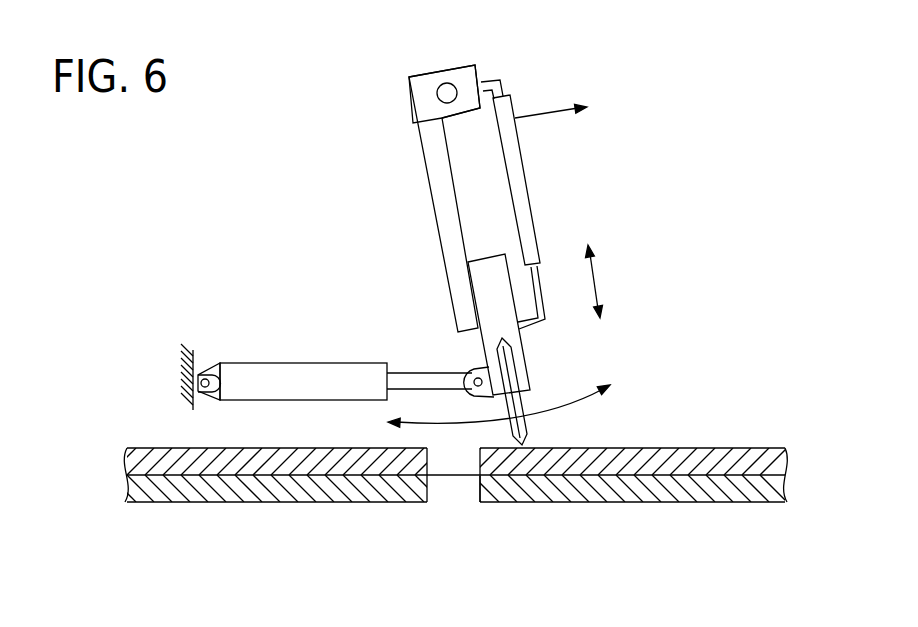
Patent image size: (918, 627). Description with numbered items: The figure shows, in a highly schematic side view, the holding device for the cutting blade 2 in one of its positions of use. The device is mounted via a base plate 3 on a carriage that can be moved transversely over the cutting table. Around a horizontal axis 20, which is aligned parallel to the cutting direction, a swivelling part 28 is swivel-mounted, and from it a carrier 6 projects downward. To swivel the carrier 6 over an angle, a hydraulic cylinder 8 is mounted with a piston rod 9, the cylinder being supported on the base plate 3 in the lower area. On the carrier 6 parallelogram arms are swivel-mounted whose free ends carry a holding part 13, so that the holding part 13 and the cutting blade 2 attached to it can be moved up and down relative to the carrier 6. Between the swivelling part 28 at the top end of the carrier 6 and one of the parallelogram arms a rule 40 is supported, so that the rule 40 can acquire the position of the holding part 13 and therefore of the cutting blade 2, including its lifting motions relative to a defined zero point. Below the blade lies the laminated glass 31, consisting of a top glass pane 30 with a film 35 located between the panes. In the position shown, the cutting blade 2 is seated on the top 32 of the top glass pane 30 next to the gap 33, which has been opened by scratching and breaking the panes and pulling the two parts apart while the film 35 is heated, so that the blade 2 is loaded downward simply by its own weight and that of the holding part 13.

The cutting blade 2 is at (527, 432).
The base plate 3 is at (203, 373).
The carrier 6 is at (437, 162).
The hydraulic cylinder 8 is at (325, 380).
The piston rod 9 is at (433, 382).
The holding part 13 is at (488, 275).
The horizontal axis 20 is at (440, 99).
The swivelling part 28 is at (420, 90).
The top glass pane 30 is at (465, 483).
The laminated glass 31 is at (226, 515).
The top of the laminated glass 32 is at (707, 439).
The gap 33 is at (459, 495).
The film 35 is at (435, 475).
The rule 40 is at (517, 187).